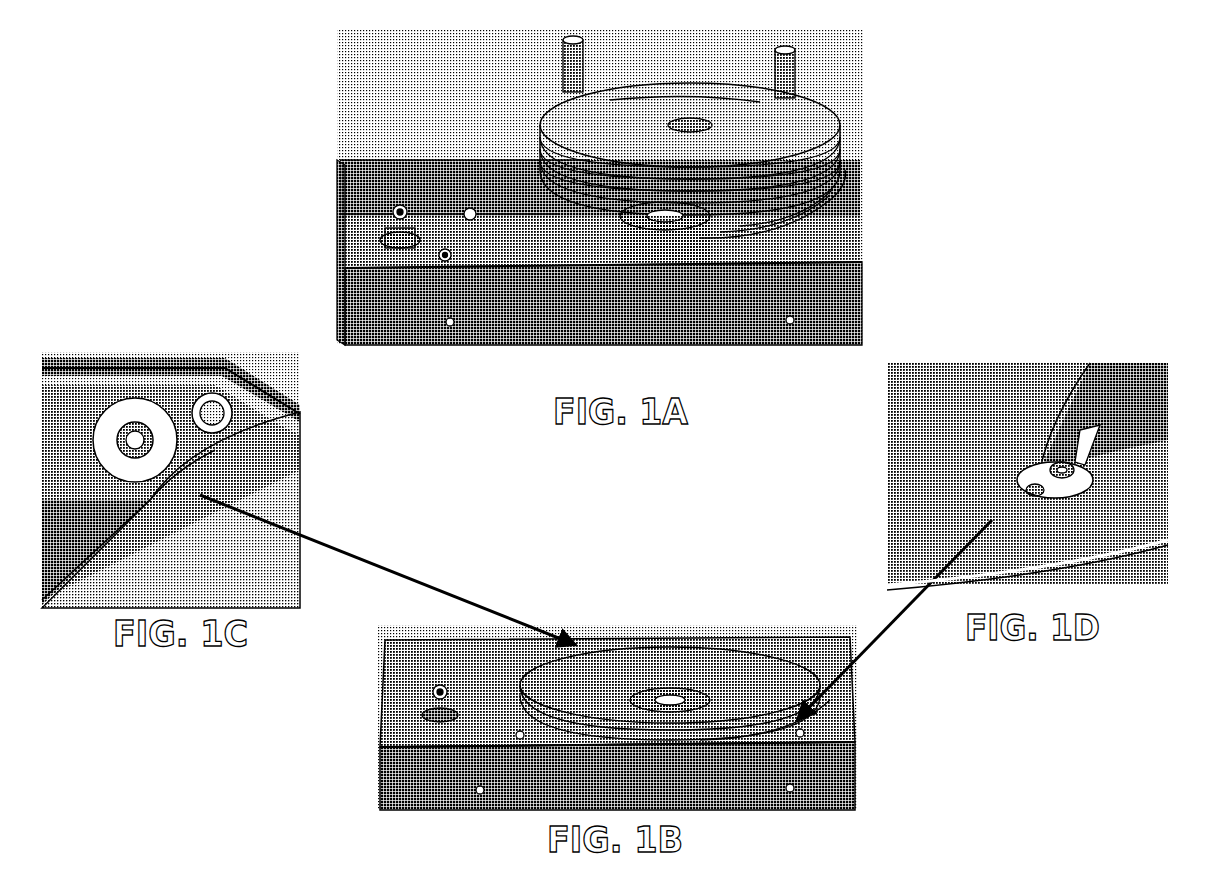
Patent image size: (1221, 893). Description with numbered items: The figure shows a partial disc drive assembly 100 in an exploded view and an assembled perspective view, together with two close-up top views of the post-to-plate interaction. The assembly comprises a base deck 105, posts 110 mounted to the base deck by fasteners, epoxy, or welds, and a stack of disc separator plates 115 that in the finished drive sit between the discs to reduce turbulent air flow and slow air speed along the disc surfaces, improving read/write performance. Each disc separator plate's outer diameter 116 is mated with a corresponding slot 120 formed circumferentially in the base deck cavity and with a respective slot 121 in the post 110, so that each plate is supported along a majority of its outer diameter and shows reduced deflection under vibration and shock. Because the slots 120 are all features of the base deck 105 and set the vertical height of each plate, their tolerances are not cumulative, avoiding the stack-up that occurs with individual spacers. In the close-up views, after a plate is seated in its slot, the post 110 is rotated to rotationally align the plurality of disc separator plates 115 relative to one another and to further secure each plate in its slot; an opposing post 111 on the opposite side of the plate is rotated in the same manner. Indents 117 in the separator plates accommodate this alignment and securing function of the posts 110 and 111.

In FIG. 1A, the disc drive assembly 100 is at (888, 62).
In FIG. 1B, the disc drive assembly 100 is at (708, 601).
In FIG. 1A, the base deck 105 is at (414, 158).
In FIG. 1C, the base deck 105 is at (209, 348).
In FIG. 1A, the post 110 is at (558, 42).
In FIG. 1C, the post 110 is at (138, 403).
In FIG. 1D, the opposing post 111 is at (1034, 462).
In FIG. 1A, the disc separator plate 115 is at (806, 146).
In FIG. 1B, the disc separator plate 115 is at (738, 648).
In FIG. 1C, the disc separator plate 115 is at (288, 472).
In FIG. 1D, the disc separator plate 115 is at (1062, 369).
In FIG. 1A, the outer diameter 116 is at (808, 112).
In FIG. 1C, the indent 117 is at (158, 500).
In FIG. 1A, the slot 120 is at (725, 183).
In FIG. 1A, the slot 121 is at (782, 66).